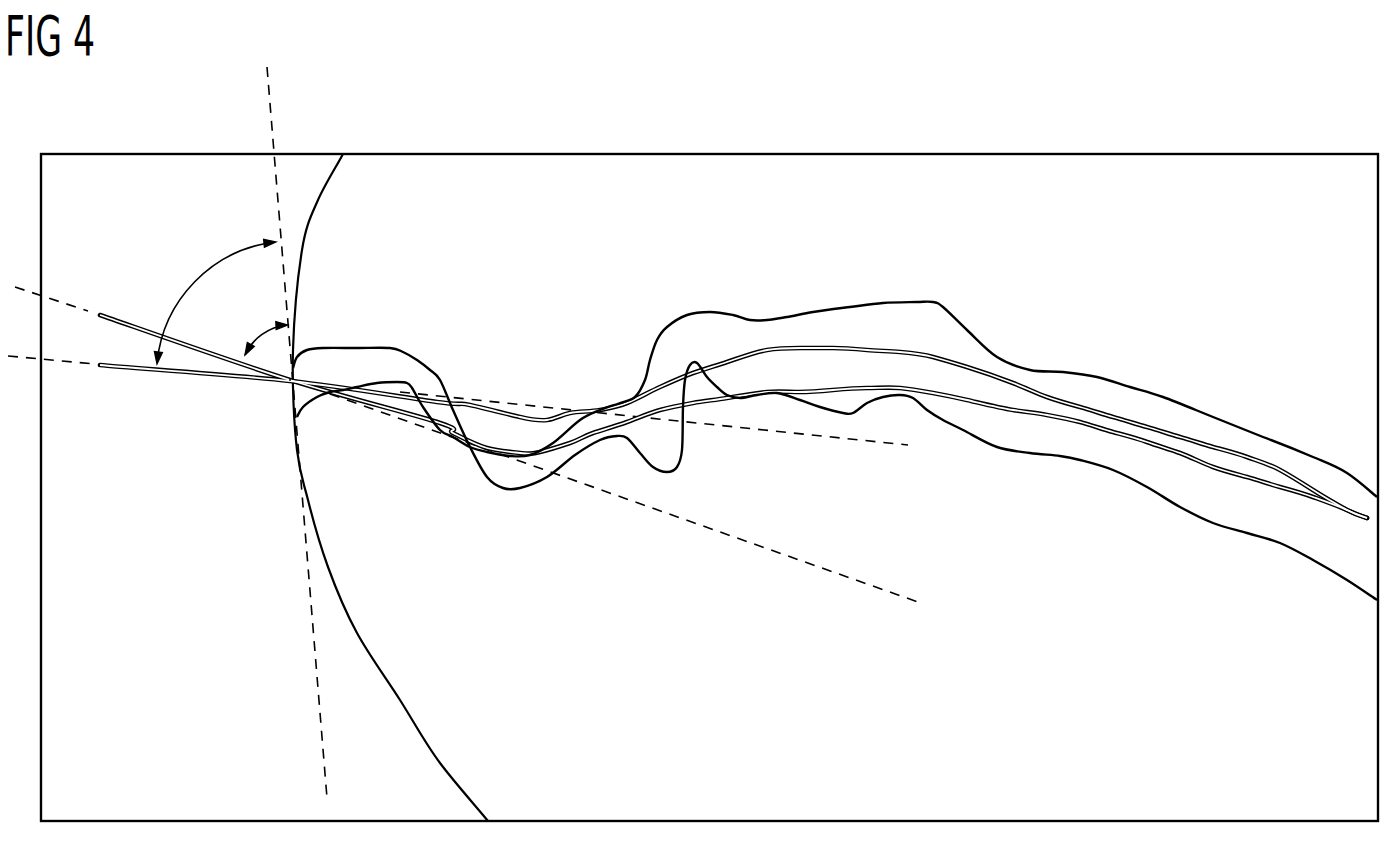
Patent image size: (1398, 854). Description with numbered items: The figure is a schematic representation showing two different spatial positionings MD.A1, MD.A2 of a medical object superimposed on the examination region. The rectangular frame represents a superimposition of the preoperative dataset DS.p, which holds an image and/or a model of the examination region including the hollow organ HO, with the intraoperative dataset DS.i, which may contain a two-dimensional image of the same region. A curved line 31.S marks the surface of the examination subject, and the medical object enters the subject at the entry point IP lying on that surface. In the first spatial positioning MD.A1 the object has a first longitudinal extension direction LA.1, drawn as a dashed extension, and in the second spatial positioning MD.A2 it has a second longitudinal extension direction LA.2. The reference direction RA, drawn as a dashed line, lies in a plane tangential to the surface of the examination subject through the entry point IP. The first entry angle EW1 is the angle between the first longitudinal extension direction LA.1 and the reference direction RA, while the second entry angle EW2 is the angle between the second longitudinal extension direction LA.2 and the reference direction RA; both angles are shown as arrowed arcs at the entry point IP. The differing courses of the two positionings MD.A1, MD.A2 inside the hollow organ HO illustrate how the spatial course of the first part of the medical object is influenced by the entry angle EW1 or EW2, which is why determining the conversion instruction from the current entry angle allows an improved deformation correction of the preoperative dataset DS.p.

The preoperative dataset DS.p is at (818, 152).
The intraoperative dataset DS.i is at (709, 487).
The reference direction RA is at (268, 107).
The sagittal plane / section line 31.S is at (435, 763).
The first longitudinal extension direction LA.1 is at (65, 305).
The second longitudinal extension direction LA.2 is at (67, 360).
The first spatial positioning of the medical object MD.A1 is at (125, 312).
The second spatial positioning of the medical object MD.A2 is at (137, 367).
The hollow organ HO is at (412, 352).
The first entry angle EW1 is at (258, 323).
The second entry angle EW2 is at (200, 270).
The entry point IP is at (283, 390).